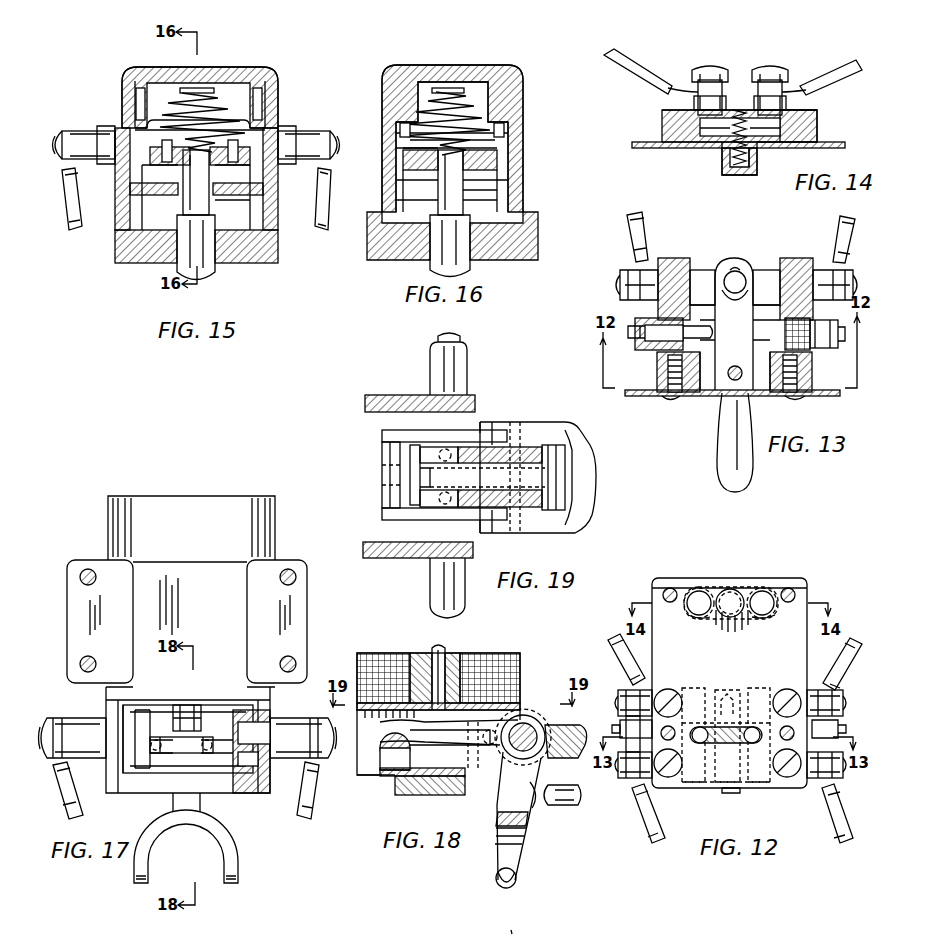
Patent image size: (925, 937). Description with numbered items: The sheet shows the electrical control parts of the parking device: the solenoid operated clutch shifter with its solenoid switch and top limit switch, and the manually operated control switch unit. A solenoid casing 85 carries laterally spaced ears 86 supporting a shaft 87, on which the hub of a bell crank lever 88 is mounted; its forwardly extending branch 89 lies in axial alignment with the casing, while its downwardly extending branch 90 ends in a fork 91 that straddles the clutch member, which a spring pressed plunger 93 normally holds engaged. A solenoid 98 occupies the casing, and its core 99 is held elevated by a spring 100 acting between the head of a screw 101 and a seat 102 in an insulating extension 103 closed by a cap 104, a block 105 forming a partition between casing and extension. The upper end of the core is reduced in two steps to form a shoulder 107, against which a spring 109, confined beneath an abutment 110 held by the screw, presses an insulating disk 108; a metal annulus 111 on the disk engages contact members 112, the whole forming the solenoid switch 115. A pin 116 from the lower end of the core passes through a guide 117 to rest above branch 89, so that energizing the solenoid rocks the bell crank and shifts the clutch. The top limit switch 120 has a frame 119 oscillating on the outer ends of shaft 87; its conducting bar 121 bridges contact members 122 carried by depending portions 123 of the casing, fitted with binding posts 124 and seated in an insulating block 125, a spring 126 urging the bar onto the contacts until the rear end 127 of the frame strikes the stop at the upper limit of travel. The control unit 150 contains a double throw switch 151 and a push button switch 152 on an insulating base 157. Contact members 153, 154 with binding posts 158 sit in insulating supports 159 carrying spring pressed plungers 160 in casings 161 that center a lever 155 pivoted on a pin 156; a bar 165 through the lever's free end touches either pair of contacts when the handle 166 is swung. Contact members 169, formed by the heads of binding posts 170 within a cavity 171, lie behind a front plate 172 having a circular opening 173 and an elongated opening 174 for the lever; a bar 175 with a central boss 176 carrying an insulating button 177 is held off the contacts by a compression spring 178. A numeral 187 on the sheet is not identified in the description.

In FIG. 19, the solenoid casing 85 is at (382, 395).
In FIG. 17, the solenoid casing 85 is at (190, 510).
In FIG. 18, the solenoid casing 85 is at (515, 660).
In FIG. 19, the ears 86 is at (528, 445).
In FIG. 18, the ears 86 is at (512, 718).
In FIG. 19, the shaft 87 is at (545, 520).
In FIG. 18, the shaft 87 is at (528, 725).
In FIG. 19, the bell crank lever 88 is at (545, 478).
In FIG. 17, the bell crank lever 88 is at (195, 715).
In FIG. 18, the bell crank lever 88 is at (508, 775).
In FIG. 19, the forwardly extending branch 89 is at (430, 476).
In FIG. 17, the forwardly extending branch 89 is at (182, 712).
In FIG. 18, the forwardly extending branch 89 is at (420, 723).
In FIG. 17, the downwardly extending branch 90 is at (203, 803).
In FIG. 18, the downwardly extending branch 90 is at (525, 815).
In FIG. 17, the fork 91 is at (232, 832).
In FIG. 18, the fork 91 is at (515, 848).
In FIG. 18, the spring pressed plunger 93 is at (562, 805).
In FIG. 18, the solenoid 98 is at (395, 660).
In FIG. 15, the solenoid core 99 is at (210, 272).
In FIG. 16, the solenoid core 99 is at (470, 265).
In FIG. 15, the spring 100 is at (245, 105).
In FIG. 16, the spring 100 is at (495, 107).
In FIG. 15, the screw 101 is at (202, 85).
In FIG. 16, the screw 101 is at (455, 88).
In FIG. 15, the seat 102 is at (245, 135).
In FIG. 16, the seat 102 is at (498, 140).
In FIG. 15, the casing extension 103 is at (128, 90).
In FIG. 16, the casing extension 103 is at (500, 125).
In FIG. 15, the cap 104 is at (268, 67).
In FIG. 16, the cap 104 is at (492, 66).
In FIG. 15, the block 105 is at (140, 262).
In FIG. 16, the block 105 is at (392, 262).
In FIG. 15, the shoulder 107 is at (170, 182).
In FIG. 16, the shoulder 107 is at (435, 172).
In FIG. 15, the disk 108 is at (300, 135).
In FIG. 16, the disk 108 is at (497, 160).
In FIG. 15, the spring 109 is at (150, 140).
In FIG. 16, the spring 109 is at (435, 140).
In FIG. 15, the abutment 110 is at (215, 97).
In FIG. 16, the abutment 110 is at (440, 92).
In FIG. 15, the metal annulus 111 is at (240, 170).
In FIG. 16, the metal annulus 111 is at (497, 175).
In FIG. 15, the contact members 112 is at (165, 192).
In FIG. 16, the contact members 112 is at (490, 195).
In FIG. 15, the solenoid switch 115 is at (232, 197).
In FIG. 16, the solenoid switch 115 is at (490, 185).
In FIG. 18, the pin 116 is at (445, 655).
In FIG. 18, the guide 117 is at (430, 662).
In FIG. 19, the frame 119 is at (550, 440).
In FIG. 17, the frame 119 is at (148, 708).
In FIG. 18, the frame 119 is at (478, 700).
In FIG. 19, the top limit switch 120 is at (382, 460).
In FIG. 17, the top limit switch 120 is at (175, 778).
In FIG. 18, the top limit switch 120 is at (383, 770).
In FIG. 19, the bar 121 is at (405, 495).
In FIG. 17, the bar 121 is at (186, 790).
In FIG. 18, the bar 121 is at (383, 750).
In FIG. 19, the contact members 122 is at (382, 465).
In FIG. 17, the contact members 122 is at (142, 780).
In FIG. 18, the contact members 122 is at (388, 780).
In FIG. 19, the depending portions 123 is at (397, 395).
In FIG. 17, the depending portions 123 is at (108, 693).
In FIG. 19, the binding posts 124 is at (465, 378).
In FIG. 17, the binding posts 124 is at (88, 730).
In FIG. 17, the block 125 is at (264, 778).
In FIG. 18, the block 125 is at (406, 795).
In FIG. 18, the spring 126 is at (478, 745).
In FIG. 19, the rear end 127 is at (585, 468).
In FIG. 18, the rear end 127 is at (575, 722).
In FIG. 12, the rear end 127 is at (640, 705).
In FIG. 14, the unit 150 is at (687, 161).
In FIG. 13, the unit 150 is at (698, 414).
In FIG. 12, the unit 150 is at (705, 577).
In FIG. 13, the double throw switch 151 is at (767, 256).
In FIG. 12, the double throw switch 151 is at (752, 785).
In FIG. 14, the push button switch 152 is at (726, 140).
In FIG. 12, the push button switch 152 is at (742, 598).
In FIG. 13, the contact members 153 is at (770, 270).
In FIG. 12, the contact members 153 is at (758, 690).
In FIG. 13, the contact members 154 is at (705, 272).
In FIG. 12, the contact members 154 is at (693, 688).
In FIG. 13, the lever 155 is at (734, 324).
In FIG. 12, the lever 155 is at (712, 720).
In FIG. 13, the pin 156 is at (730, 380).
In FIG. 12, the pin 156 is at (731, 790).
In FIG. 14, the base 157 is at (662, 122).
In FIG. 13, the base 157 is at (662, 392).
In FIG. 12, the base 157 is at (652, 585).
In FIG. 13, the binding posts 158 is at (622, 285).
In FIG. 12, the binding posts 158 is at (628, 693).
In FIG. 13, the supports 159 is at (662, 262).
In FIG. 12, the supports 159 is at (668, 688).
In FIG. 13, the spring pressed plungers 160 is at (628, 330).
In FIG. 12, the spring pressed plungers 160 is at (700, 745).
In FIG. 13, the casings 161 is at (640, 322).
In FIG. 12, the casings 161 is at (640, 740).
In FIG. 13, the bar 165 is at (740, 270).
In FIG. 12, the bar 165 is at (742, 690).
In FIG. 13, the handle 166 is at (740, 470).
In FIG. 14, the contact members 169 is at (700, 100).
In FIG. 12, the contact members 169 is at (685, 592).
In FIG. 14, the binding posts 170 is at (706, 68).
In FIG. 14, the cavity 171 is at (815, 120).
In FIG. 12, the cavity 171 is at (715, 585).
In FIG. 14, the front plate 172 is at (648, 147).
In FIG. 13, the front plate 172 is at (640, 392).
In FIG. 14, the circular opening 173 is at (757, 150).
In FIG. 13, the elongated opening 174 is at (700, 400).
In FIG. 14, the bar 175 is at (700, 128).
In FIG. 12, the bar 175 is at (770, 592).
In FIG. 14, the central boss 176 is at (755, 160).
In FIG. 14, the button 177 is at (738, 172).
In FIG. 12, the button 177 is at (731, 598).
In FIG. 14, the compression spring 178 is at (738, 110).
In FIG. 18, the reference 187 is at (511, 933).